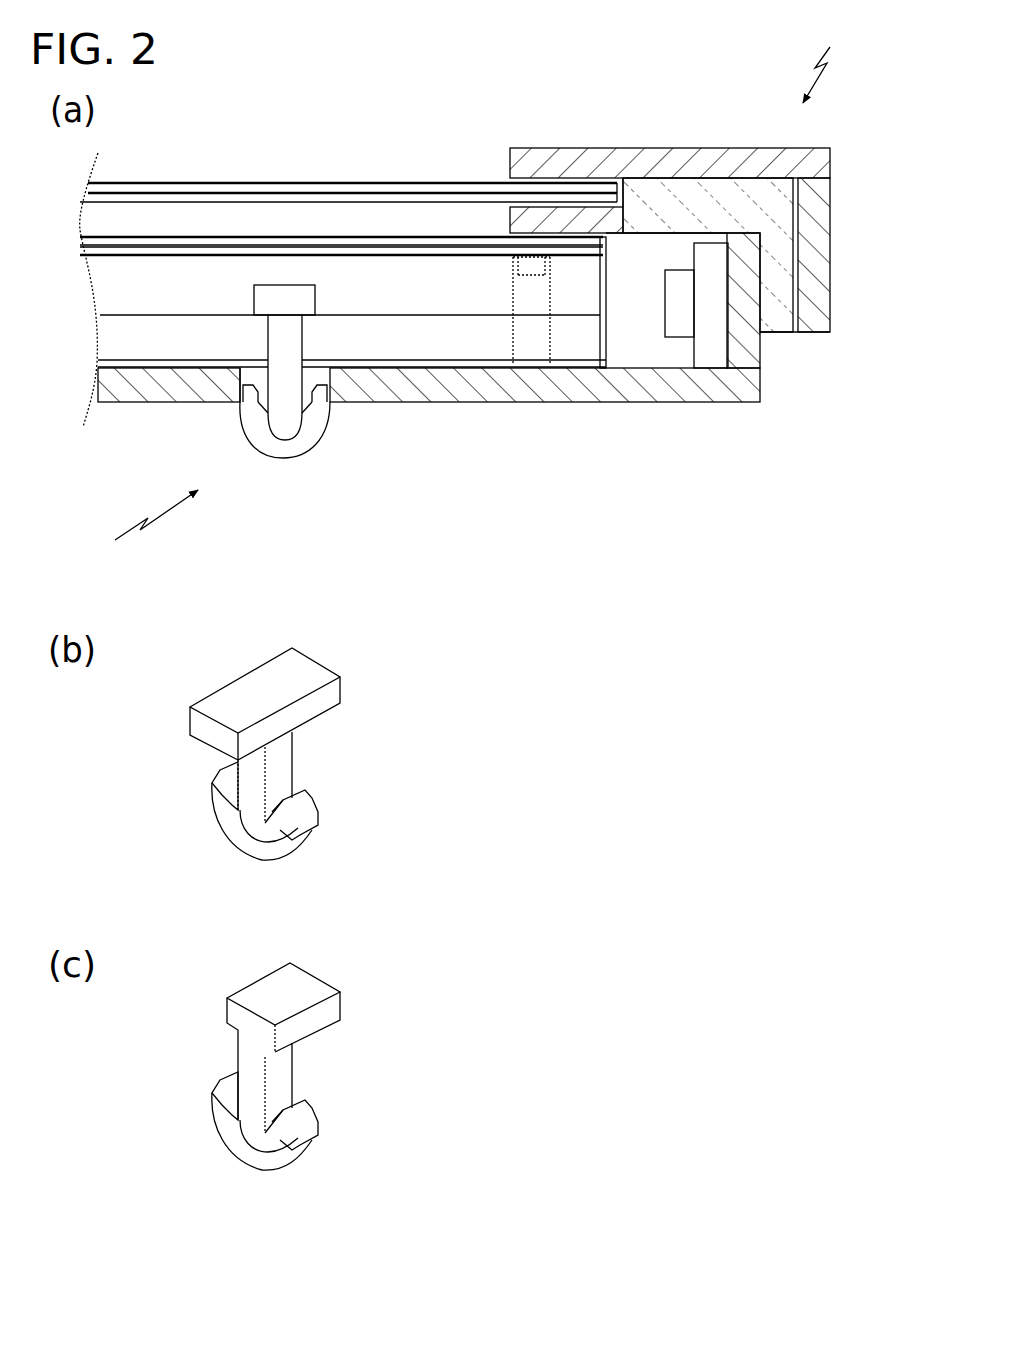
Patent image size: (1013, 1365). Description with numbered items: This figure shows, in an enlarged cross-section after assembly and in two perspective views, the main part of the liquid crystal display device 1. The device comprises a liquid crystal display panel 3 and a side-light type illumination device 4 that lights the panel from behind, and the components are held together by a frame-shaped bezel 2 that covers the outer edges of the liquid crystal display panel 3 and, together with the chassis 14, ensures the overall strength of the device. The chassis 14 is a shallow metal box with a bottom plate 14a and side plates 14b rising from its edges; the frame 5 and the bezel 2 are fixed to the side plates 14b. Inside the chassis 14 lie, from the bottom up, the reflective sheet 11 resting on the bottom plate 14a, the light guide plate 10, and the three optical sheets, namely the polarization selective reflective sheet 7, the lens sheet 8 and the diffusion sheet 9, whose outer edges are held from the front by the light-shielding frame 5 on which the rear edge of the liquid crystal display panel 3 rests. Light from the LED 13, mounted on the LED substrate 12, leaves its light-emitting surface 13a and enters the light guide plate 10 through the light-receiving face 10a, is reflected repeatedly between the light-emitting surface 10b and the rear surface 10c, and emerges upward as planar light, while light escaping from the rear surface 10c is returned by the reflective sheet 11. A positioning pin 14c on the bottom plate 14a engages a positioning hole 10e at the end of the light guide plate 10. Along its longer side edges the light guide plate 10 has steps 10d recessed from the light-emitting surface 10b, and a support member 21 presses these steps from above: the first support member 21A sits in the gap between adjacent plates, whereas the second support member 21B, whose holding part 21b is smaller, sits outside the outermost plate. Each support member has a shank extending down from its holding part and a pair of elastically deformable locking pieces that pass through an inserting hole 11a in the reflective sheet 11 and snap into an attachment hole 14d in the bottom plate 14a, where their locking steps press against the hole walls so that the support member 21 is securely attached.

The liquid crystal display device 1 is at (827, 61).
The bezel 2 is at (662, 148).
The liquid crystal display panel 3 is at (314, 172).
The illumination device 4 is at (149, 529).
The frame 5 is at (725, 197).
The polarization selective reflective sheet 7 is at (110, 232).
The lens sheet 8 is at (110, 245).
The diffusion sheet 9 is at (110, 257).
The light guide plate 10 is at (326, 309).
The light-receiving face 10a is at (603, 240).
The light-emitting surface 10b is at (405, 253).
The rear surface 10c is at (398, 403).
The step 10d is at (430, 303).
The positioning hole 10e is at (597, 403).
The reflective sheet 11 is at (127, 402).
The inserting hole 11a is at (170, 373).
The LED substrate 12 is at (722, 340).
The LED 13 is at (689, 365).
The light-emitting surface 13a is at (665, 308).
The chassis 14 is at (615, 295).
The bottom plate 14a is at (512, 405).
The side plate 14b is at (748, 297).
The positioning pin 14c is at (492, 180).
The attachment hole 14d is at (352, 403).
The support member 21 is at (260, 320).
The first support member 21A is at (343, 717).
The second support member 21B is at (343, 1027).
The holding part 21b is at (292, 987).